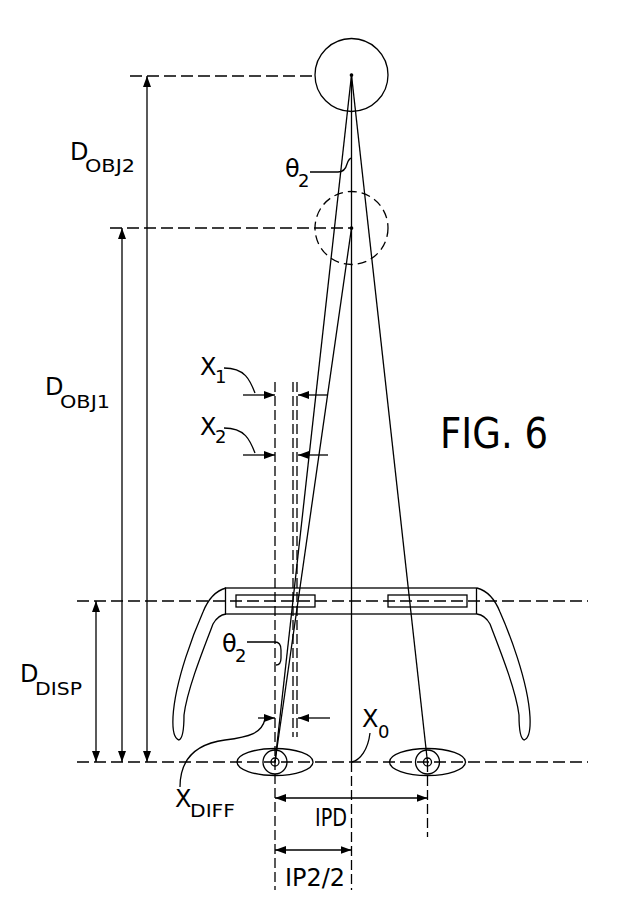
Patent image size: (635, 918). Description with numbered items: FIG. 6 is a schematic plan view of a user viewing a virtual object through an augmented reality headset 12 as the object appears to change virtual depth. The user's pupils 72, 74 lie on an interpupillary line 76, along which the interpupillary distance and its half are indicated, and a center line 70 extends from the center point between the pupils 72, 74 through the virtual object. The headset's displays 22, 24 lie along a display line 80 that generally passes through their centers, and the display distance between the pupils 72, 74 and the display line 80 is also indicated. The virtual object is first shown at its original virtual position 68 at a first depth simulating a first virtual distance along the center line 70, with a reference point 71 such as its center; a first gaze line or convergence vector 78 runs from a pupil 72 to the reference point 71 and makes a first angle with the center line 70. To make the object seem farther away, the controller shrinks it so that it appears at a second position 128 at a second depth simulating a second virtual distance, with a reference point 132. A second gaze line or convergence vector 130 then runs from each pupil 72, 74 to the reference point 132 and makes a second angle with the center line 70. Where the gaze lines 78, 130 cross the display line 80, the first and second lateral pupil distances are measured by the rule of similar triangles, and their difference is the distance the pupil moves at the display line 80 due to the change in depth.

The augmented reality headset 12 is at (433, 616).
The display 22 is at (255, 593).
The display 24 is at (448, 593).
The virtual position 68 is at (317, 221).
The center line 70 is at (352, 379).
The reference point 71 is at (352, 228).
The pupil 72 is at (274, 772).
The pupil 74 is at (433, 770).
The interpupillary line 76 is at (534, 762).
The gaze line 78 is at (338, 310).
The display line 80 is at (540, 601).
The second position 128 is at (318, 56).
The second gaze line 130 is at (344, 134).
The reference point 132 is at (352, 77).